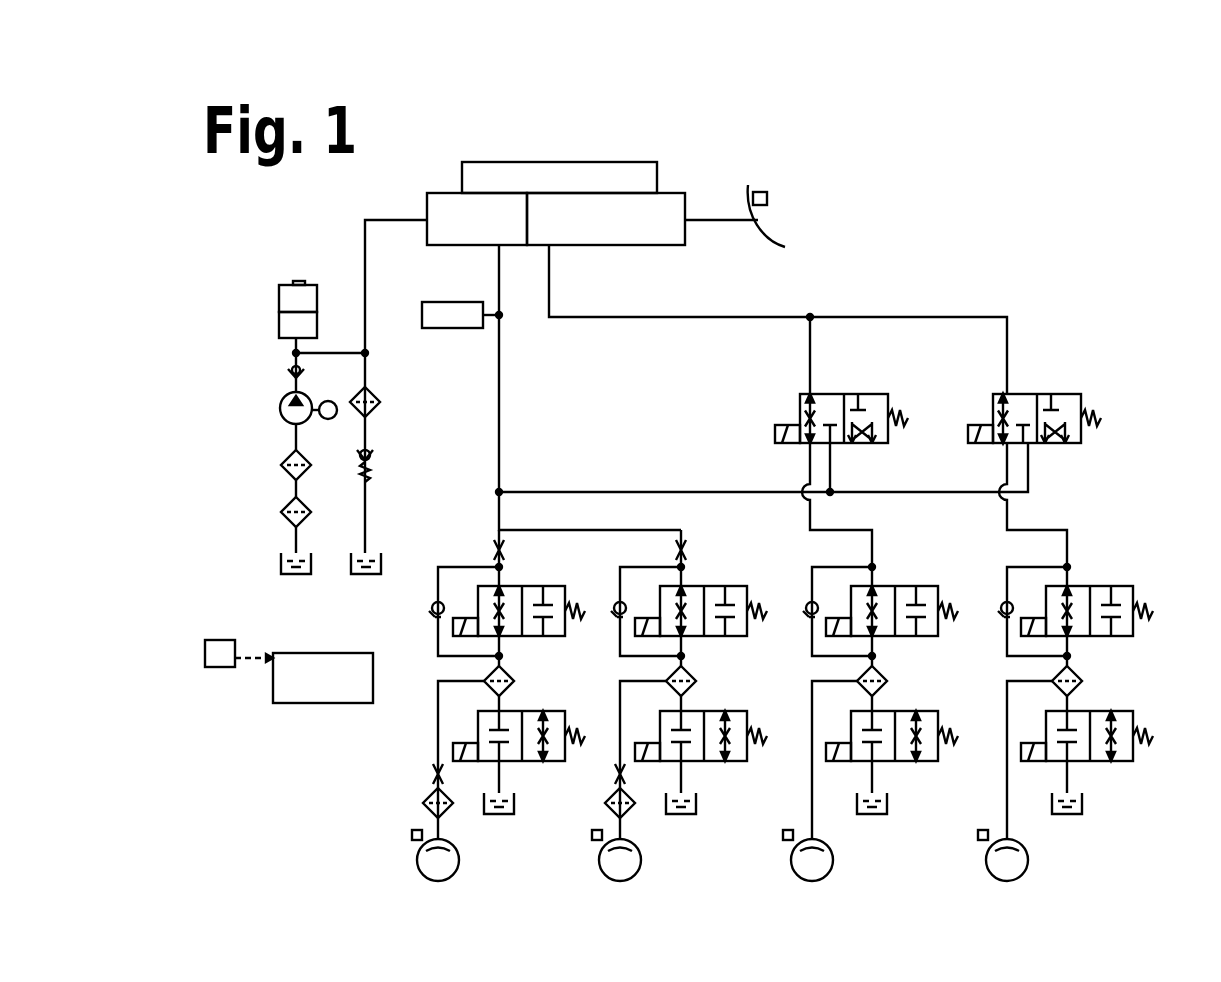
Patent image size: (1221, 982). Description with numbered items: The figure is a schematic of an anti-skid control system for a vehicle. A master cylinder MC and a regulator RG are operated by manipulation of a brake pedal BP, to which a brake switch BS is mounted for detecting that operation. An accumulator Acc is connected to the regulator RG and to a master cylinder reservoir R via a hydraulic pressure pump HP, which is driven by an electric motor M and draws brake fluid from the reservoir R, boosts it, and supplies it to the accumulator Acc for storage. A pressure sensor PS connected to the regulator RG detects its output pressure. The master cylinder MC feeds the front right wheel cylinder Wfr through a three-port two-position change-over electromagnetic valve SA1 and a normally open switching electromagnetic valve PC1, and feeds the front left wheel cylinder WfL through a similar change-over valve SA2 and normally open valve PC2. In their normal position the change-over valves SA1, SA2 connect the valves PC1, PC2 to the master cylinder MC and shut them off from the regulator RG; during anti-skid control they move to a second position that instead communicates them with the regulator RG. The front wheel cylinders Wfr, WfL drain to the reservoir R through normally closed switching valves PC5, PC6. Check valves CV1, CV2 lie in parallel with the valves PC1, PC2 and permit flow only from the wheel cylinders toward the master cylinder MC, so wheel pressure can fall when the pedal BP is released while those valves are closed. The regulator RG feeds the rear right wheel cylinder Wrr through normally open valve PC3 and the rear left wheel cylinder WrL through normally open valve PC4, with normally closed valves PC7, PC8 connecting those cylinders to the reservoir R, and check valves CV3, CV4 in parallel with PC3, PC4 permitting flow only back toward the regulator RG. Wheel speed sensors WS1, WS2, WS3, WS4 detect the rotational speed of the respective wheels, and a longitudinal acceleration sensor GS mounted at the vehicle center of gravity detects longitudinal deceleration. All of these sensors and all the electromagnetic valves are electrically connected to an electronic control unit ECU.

The master cylinder reservoir R is at (615, 165).
The regulator RG is at (477, 219).
The master cylinder MC is at (642, 219).
The brake pedal BP is at (778, 240).
The brake switch BS is at (767, 197).
The pressure sensor PS is at (440, 328).
The accumulator Acc is at (279, 296).
The hydraulic pressure pump HP is at (280, 408).
The electric motor M is at (330, 419).
The longitudinal acceleration sensor GS is at (212, 640).
The electronic control unit ECU is at (323, 703).
The three-port two-position change-over electromagnetic valve SA1 is at (1068, 394).
The three-port two-position change-over electromagnetic valve SA2 is at (876, 394).
The check valve CV1 is at (1003, 603).
The check valve CV2 is at (808, 603).
The check valve CV3 is at (617, 602).
The check valve CV4 is at (430, 606).
The normally open type switching electromagnetic valve PC1 is at (1104, 586).
The normally open type switching electromagnetic valve PC2 is at (908, 586).
The normally open type switching electromagnetic valve PC3 is at (716, 586).
The normally open type switching electromagnetic valve PC4 is at (536, 586).
The normally closed type switching electromagnetic valve PC5 is at (1104, 711).
The normally closed type switching electromagnetic valve PC6 is at (908, 711).
The normally closed type switching valve PC7 is at (718, 711).
The normally closed type switching valve PC8 is at (536, 711).
The rear left wheel cylinder WrL is at (458, 845).
The rear right wheel cylinder Wrr is at (641, 845).
The front left wheel cylinder WfL is at (833, 845).
The front right wheel cylinder Wfr is at (1028, 845).
The wheel speed sensor WS1 is at (978, 840).
The wheel speed sensor WS2 is at (783, 840).
The wheel speed sensor WS3 is at (592, 840).
The wheel speed sensor WS4 is at (412, 840).